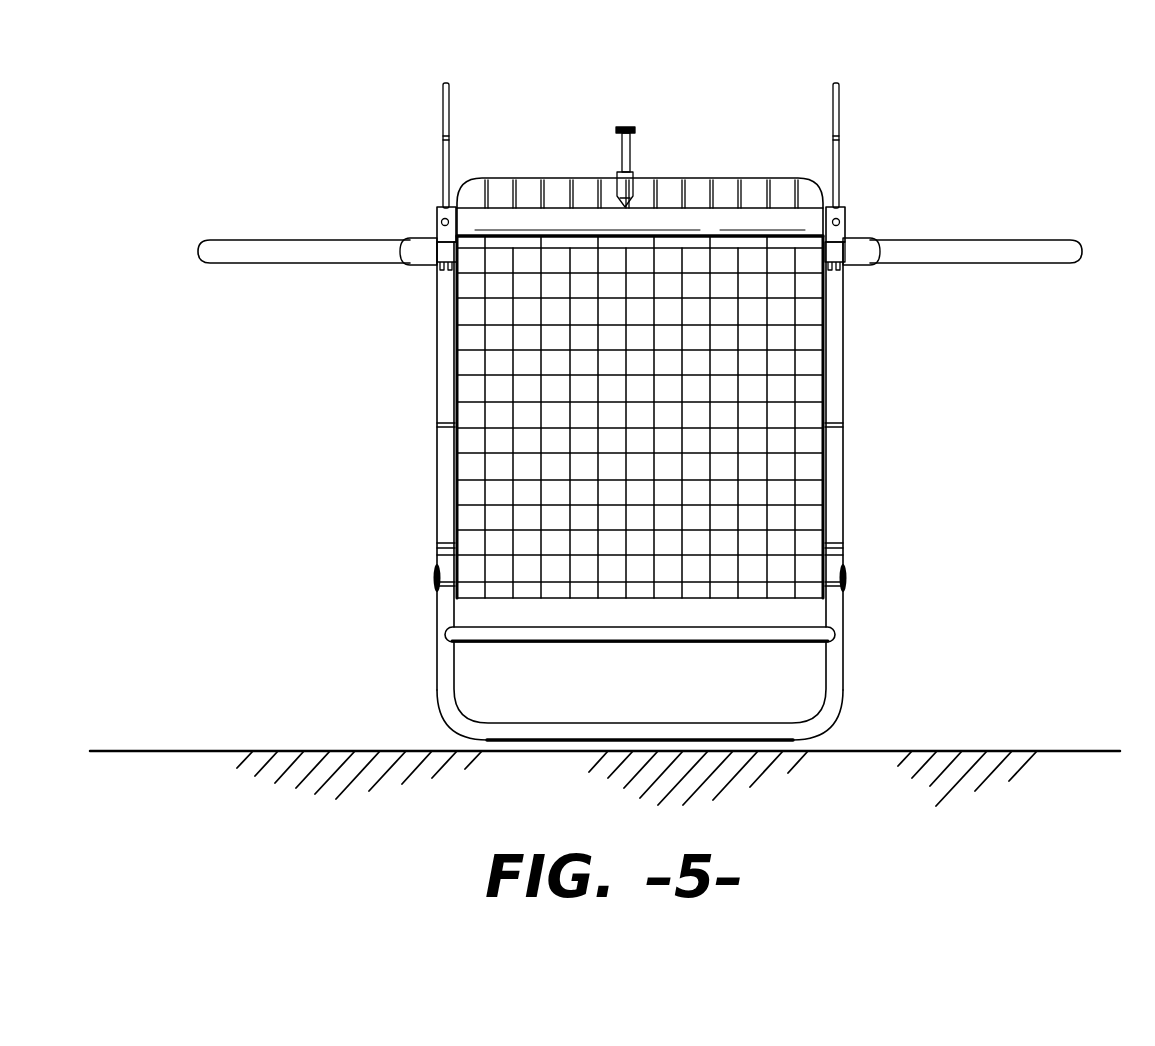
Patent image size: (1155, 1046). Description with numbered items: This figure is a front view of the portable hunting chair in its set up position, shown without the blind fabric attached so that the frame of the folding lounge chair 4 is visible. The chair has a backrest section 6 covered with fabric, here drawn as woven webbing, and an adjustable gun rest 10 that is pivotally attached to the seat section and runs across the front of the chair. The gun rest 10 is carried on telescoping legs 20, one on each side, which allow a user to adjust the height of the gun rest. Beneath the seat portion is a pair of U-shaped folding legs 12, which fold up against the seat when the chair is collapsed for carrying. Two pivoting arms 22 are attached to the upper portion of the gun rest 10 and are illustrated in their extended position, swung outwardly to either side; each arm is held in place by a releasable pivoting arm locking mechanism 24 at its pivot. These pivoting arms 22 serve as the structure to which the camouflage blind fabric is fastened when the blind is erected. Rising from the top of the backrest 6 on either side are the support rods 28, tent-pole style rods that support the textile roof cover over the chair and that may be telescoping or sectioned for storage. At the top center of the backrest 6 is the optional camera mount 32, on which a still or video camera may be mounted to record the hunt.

The folding lounge chair 4 is at (314, 116).
The backrest section 6 is at (777, 462).
The adjustable gun rest 10 is at (663, 218).
The U-shaped folding legs 12 is at (836, 670).
The telescoping legs 20 is at (445, 356).
The pivoting arms 22 is at (277, 240).
The releasable pivoting arm locking mechanism 24 is at (443, 246).
The support rods 28 is at (443, 115).
The camera mount 32 is at (615, 152).